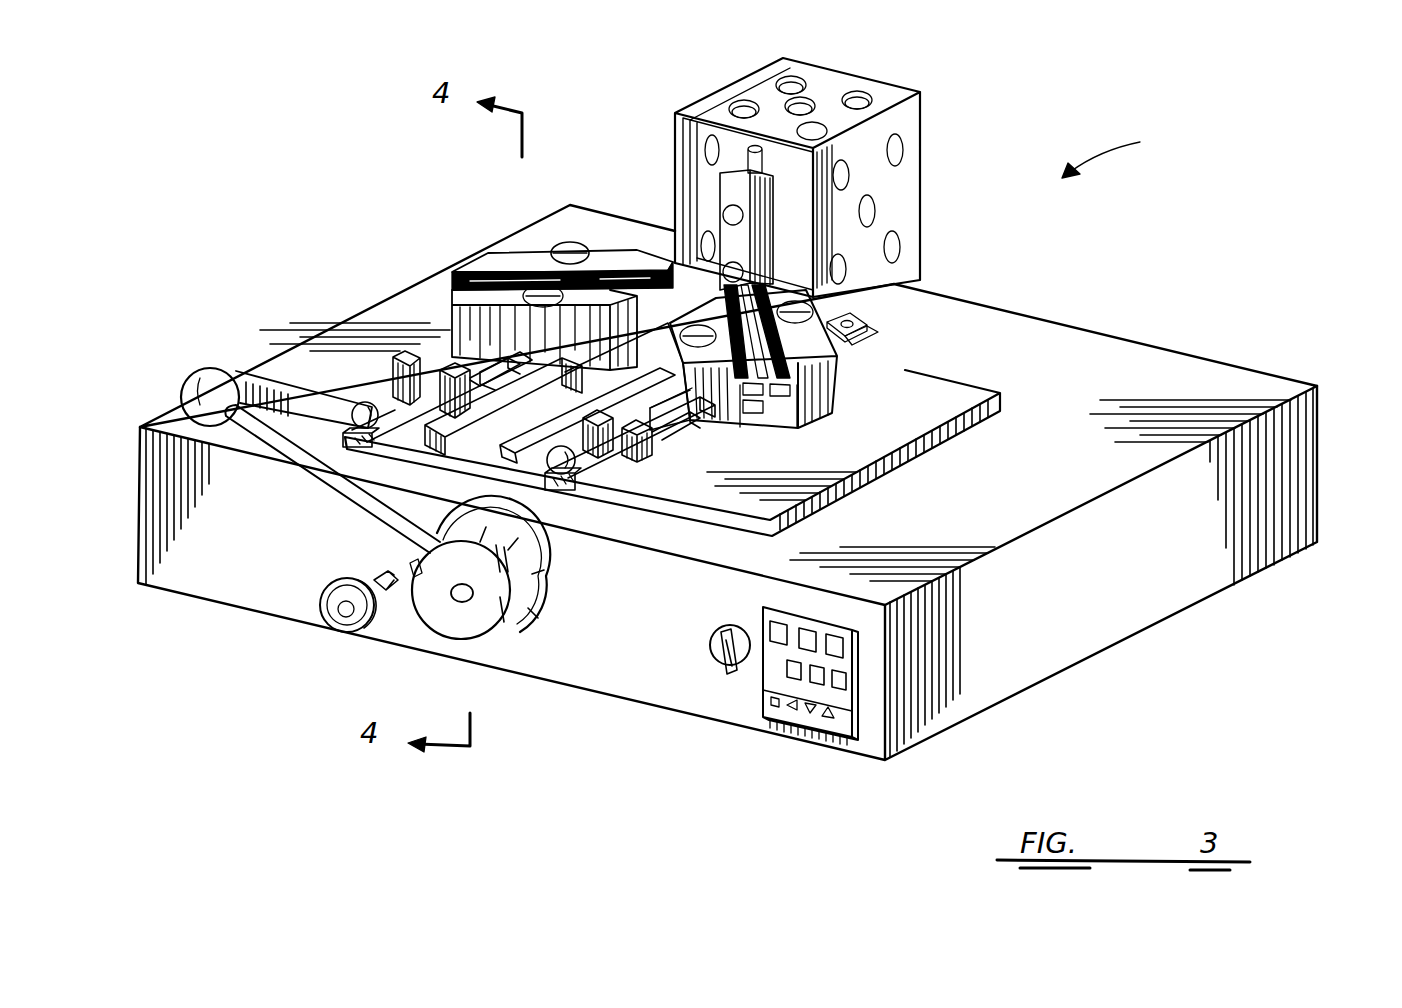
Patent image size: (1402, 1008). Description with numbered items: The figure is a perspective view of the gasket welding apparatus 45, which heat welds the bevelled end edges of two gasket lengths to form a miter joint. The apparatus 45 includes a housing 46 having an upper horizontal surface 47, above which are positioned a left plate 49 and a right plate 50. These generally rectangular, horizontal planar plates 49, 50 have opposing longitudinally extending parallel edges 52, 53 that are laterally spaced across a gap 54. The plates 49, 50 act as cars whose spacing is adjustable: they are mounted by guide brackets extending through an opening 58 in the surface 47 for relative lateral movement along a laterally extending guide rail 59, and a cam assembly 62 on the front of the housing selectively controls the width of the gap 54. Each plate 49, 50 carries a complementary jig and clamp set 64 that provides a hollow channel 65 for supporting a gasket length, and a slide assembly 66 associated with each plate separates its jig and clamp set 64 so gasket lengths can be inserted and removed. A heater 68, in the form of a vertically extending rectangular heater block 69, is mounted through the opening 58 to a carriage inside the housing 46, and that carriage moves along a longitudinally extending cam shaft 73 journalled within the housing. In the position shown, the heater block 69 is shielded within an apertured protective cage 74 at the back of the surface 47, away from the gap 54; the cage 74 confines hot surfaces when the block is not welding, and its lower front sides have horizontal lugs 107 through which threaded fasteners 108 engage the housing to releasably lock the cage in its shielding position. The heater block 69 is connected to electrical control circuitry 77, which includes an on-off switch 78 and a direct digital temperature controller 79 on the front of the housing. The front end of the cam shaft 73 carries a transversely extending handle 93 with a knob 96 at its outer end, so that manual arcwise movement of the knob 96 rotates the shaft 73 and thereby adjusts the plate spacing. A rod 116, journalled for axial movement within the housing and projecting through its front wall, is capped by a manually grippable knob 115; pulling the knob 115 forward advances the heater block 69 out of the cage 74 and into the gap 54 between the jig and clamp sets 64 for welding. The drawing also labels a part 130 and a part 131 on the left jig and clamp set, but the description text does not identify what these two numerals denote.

The apparatus 45 is at (1126, 149).
The housing 46 is at (1318, 480).
The upper horizontal surface 47 is at (1175, 357).
The left plate 49 is at (295, 358).
The right plate 50 is at (950, 385).
The edge 52 is at (482, 459).
The edge 53 is at (555, 470).
The gap 54 is at (549, 433).
The opening 58 is at (620, 381).
The guide rail 59 is at (525, 462).
The cam assembly 62 is at (482, 634).
The jig and clamp set 64 is at (768, 432).
The hollow channel 65 is at (792, 413).
The slide assembly 66 is at (378, 381).
The heater 68 is at (713, 193).
The heater block 69 is at (785, 222).
The cam shaft 73 is at (468, 600).
The apertured protective cage 74 is at (925, 128).
The electrical control circuitry 77 is at (770, 738).
The on-off switch 78 is at (712, 632).
The direct digital controller 79 is at (762, 693).
The handle 93 is at (305, 470).
The knob 96 is at (198, 392).
The lug 107 is at (844, 330).
The threaded fastener 108 is at (848, 305).
The knob 115 is at (333, 637).
The rod 116 is at (396, 630).
The top plate 130 is at (500, 267).
The left block 131 is at (467, 327).